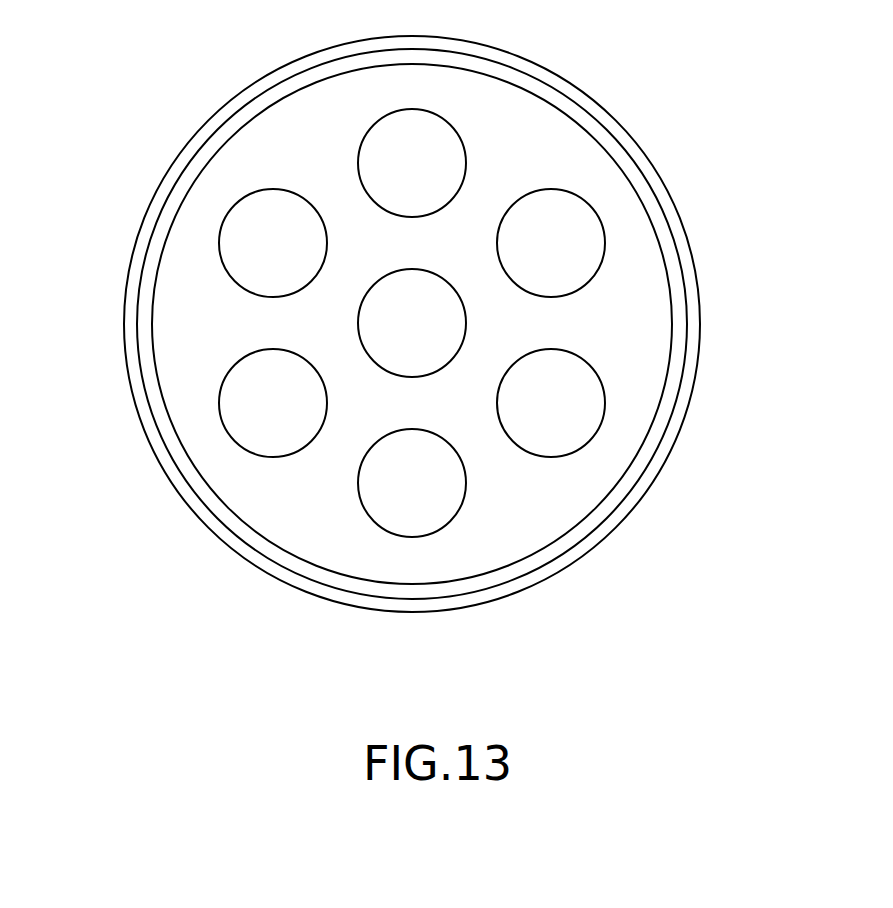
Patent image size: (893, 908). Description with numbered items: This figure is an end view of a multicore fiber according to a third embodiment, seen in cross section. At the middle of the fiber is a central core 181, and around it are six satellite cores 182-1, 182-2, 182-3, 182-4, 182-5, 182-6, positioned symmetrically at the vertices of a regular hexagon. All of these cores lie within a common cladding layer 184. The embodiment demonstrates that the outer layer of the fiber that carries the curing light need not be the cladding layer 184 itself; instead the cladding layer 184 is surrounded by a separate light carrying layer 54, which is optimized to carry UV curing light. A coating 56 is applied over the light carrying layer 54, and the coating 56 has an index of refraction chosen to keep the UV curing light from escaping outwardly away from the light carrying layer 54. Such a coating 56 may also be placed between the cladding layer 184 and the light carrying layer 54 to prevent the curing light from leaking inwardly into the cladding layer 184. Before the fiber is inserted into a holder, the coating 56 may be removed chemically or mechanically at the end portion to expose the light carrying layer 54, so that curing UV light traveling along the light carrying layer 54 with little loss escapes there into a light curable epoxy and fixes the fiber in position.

The light carrying layer 54 is at (672, 368).
The coating 56 is at (680, 400).
The central core 181 is at (424, 322).
The satellite core 182-1 is at (387, 137).
The satellite core 182-2 is at (595, 225).
The satellite core 182-3 is at (583, 417).
The satellite core 182-4 is at (438, 522).
The satellite core 182-5 is at (230, 403).
The satellite core 182-6 is at (237, 232).
The cladding layer 184 is at (413, 319).